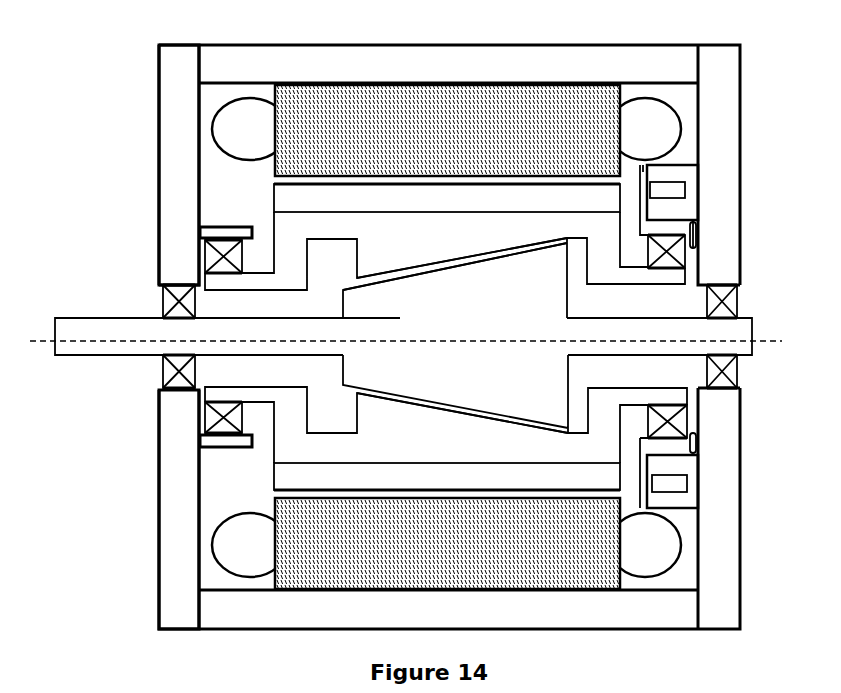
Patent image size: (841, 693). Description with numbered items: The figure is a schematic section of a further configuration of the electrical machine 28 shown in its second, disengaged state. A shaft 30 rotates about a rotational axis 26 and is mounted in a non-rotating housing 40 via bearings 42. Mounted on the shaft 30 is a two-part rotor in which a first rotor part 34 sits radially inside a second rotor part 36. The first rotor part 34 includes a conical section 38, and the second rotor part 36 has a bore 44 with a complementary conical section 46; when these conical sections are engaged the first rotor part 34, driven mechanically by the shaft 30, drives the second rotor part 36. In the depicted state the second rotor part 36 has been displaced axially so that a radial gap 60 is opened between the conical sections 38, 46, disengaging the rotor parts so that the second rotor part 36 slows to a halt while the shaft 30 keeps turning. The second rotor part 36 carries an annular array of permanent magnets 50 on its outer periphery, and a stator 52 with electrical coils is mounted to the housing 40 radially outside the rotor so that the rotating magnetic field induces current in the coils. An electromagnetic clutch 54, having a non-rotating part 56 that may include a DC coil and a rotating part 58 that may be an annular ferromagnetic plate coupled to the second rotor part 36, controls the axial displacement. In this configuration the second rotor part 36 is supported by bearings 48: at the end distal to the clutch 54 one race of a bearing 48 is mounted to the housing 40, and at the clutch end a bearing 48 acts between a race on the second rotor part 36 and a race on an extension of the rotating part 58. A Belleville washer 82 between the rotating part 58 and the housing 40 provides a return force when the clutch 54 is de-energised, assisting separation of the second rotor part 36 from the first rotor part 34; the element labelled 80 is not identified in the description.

The rotational axis 26 is at (762, 343).
The electrical machine 28 is at (95, 86).
The shaft 30 is at (140, 351).
The first rotor part 34 is at (400, 317).
The second rotor part 36 is at (390, 247).
The conical section 38 is at (490, 261).
The housing 40 is at (166, 175).
The bearings 42 is at (166, 303).
The bore 44 is at (577, 243).
The conical section 46 is at (385, 267).
The bearings 48 is at (217, 404).
The permanent magnets 50 is at (367, 202).
The stator 52 is at (390, 112).
The clutch 54 is at (689, 517).
The non-rotating part 56 is at (708, 194).
The rotating part 58 is at (641, 168).
The radial gap 60 is at (337, 268).
The magnet back plate 80 is at (210, 440).
The Belleville washer 82 is at (697, 233).